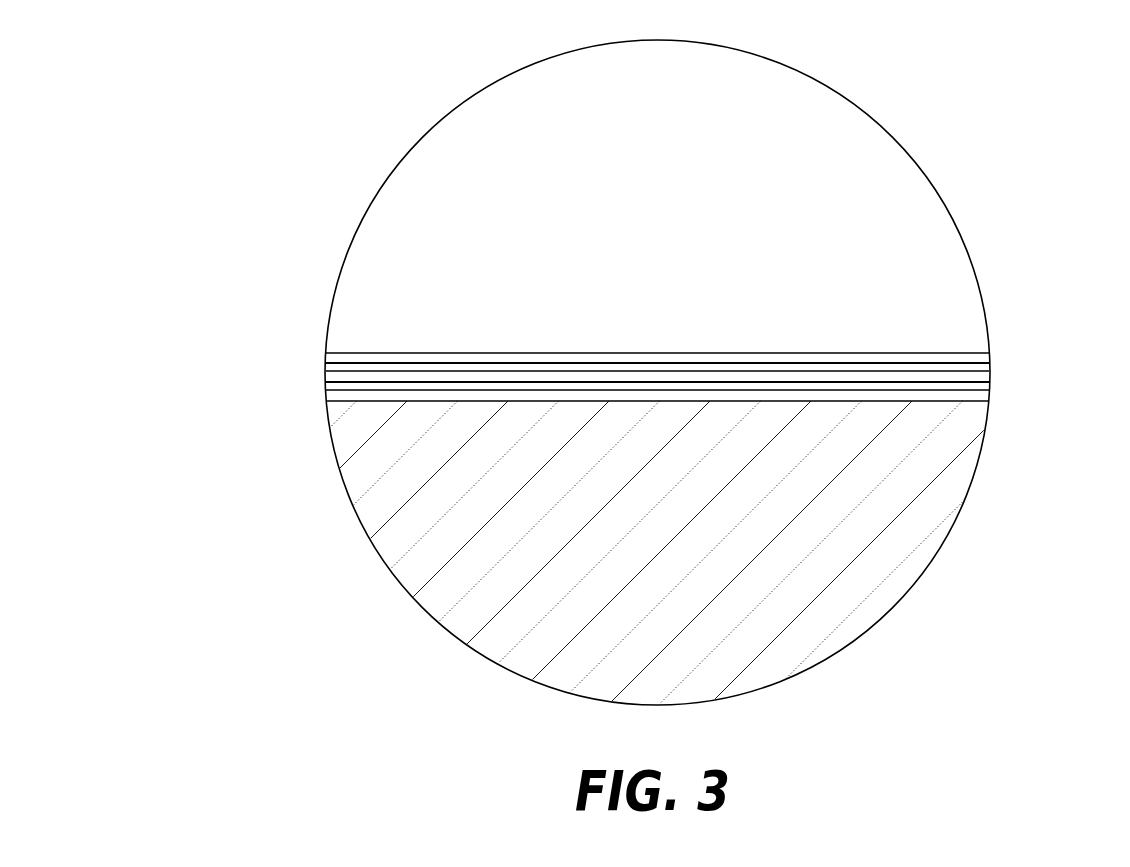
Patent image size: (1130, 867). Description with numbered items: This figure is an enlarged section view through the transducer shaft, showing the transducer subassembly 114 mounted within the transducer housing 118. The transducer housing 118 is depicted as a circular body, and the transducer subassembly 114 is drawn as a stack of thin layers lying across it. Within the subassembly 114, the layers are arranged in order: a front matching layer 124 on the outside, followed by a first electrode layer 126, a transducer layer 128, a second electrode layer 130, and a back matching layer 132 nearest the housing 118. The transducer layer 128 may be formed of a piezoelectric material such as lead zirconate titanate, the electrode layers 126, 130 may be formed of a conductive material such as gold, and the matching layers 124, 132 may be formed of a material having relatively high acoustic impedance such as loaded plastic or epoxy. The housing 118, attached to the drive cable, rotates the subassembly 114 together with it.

The transducer subassembly 114 is at (1002, 400).
The transducer housing 118 is at (858, 597).
The front matching layer 124 is at (337, 351).
The first electrode layer 126 is at (325, 366).
The transducer layer 128 is at (325, 381).
The second electrode layer 130 is at (325, 387).
The back matching layer 132 is at (325, 398).